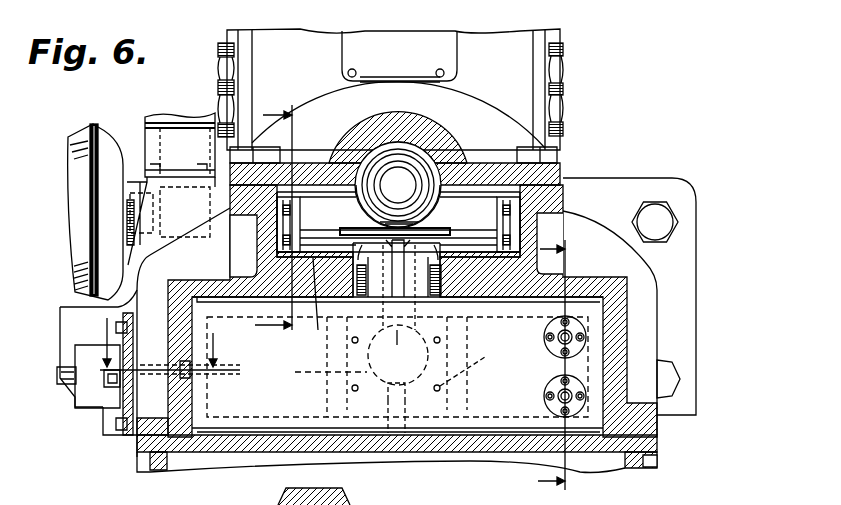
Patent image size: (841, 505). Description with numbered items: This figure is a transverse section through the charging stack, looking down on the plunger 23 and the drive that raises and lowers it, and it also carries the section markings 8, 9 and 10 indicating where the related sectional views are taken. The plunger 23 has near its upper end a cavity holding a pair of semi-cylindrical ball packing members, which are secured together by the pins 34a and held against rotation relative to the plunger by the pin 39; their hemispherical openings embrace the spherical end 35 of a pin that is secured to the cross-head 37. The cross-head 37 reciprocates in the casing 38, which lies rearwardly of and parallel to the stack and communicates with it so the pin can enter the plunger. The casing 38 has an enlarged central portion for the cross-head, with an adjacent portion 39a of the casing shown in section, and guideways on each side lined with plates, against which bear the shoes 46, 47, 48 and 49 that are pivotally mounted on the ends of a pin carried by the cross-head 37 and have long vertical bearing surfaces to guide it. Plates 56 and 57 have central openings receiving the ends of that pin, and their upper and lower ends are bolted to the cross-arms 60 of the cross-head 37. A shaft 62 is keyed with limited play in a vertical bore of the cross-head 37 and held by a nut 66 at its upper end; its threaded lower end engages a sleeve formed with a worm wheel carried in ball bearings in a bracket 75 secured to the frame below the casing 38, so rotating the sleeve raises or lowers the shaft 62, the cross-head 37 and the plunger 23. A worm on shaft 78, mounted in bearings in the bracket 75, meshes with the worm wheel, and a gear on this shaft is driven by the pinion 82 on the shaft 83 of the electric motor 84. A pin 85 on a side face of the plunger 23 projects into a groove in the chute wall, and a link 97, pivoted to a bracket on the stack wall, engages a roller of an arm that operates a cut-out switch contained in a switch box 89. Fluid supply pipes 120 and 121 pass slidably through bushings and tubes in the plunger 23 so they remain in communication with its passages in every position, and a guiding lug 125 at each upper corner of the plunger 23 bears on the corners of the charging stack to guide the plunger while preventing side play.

The section line 8- 8 is at (159, 342).
The section line 9- 9 is at (548, 363).
The section line 10- 10 is at (273, 221).
The plunger 23 is at (278, 408).
The pins 34a is at (397, 367).
The spherical end 35 is at (317, 372).
The cross-head 37 is at (398, 355).
The casing 38 is at (502, 140).
The pin 39 is at (407, 393).
The bearing boss 39a is at (440, 134).
The shoe 46 is at (478, 197).
The shoe 47 is at (492, 267).
The shoe 48 is at (310, 197).
The shoe 49 is at (312, 304).
The plate 56 is at (280, 231).
The plate 57 is at (563, 211).
The cross-arms 60 is at (562, 180).
The shaft 62 is at (400, 183).
The nut 66 is at (380, 165).
The bracket 75 is at (513, 78).
The shaft 78 is at (224, 74).
The pinion 82 is at (213, 238).
The shaft 83 is at (163, 238).
The electric motor 84 is at (80, 192).
The pin 85 is at (187, 373).
The switch box 89 is at (83, 397).
The link 97 is at (56, 376).
The pipe 120 is at (588, 333).
The pipe 121 is at (588, 390).
The guiding lug 125 is at (603, 293).